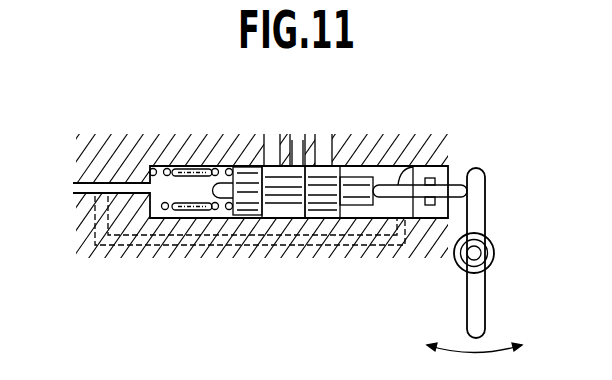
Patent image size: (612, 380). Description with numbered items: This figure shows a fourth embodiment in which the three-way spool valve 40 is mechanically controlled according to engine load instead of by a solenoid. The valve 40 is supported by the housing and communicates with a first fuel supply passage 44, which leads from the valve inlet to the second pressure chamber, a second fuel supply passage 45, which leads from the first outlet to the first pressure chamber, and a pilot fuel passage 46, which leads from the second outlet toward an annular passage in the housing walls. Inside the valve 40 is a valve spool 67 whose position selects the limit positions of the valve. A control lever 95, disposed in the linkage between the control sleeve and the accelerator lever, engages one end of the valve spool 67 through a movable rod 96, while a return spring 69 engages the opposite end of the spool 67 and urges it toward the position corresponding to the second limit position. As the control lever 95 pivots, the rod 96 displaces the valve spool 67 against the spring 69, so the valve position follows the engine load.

The three-way spool valve 40 is at (390, 113).
The first fuel supply passage 44 is at (297, 140).
The second fuel supply passage 45 is at (323, 140).
The pilot fuel passage 46 is at (272, 140).
The valve spool 67 is at (284, 200).
The return spring 69 is at (166, 209).
The control lever 95 is at (484, 219).
The movable rod 96 is at (400, 178).